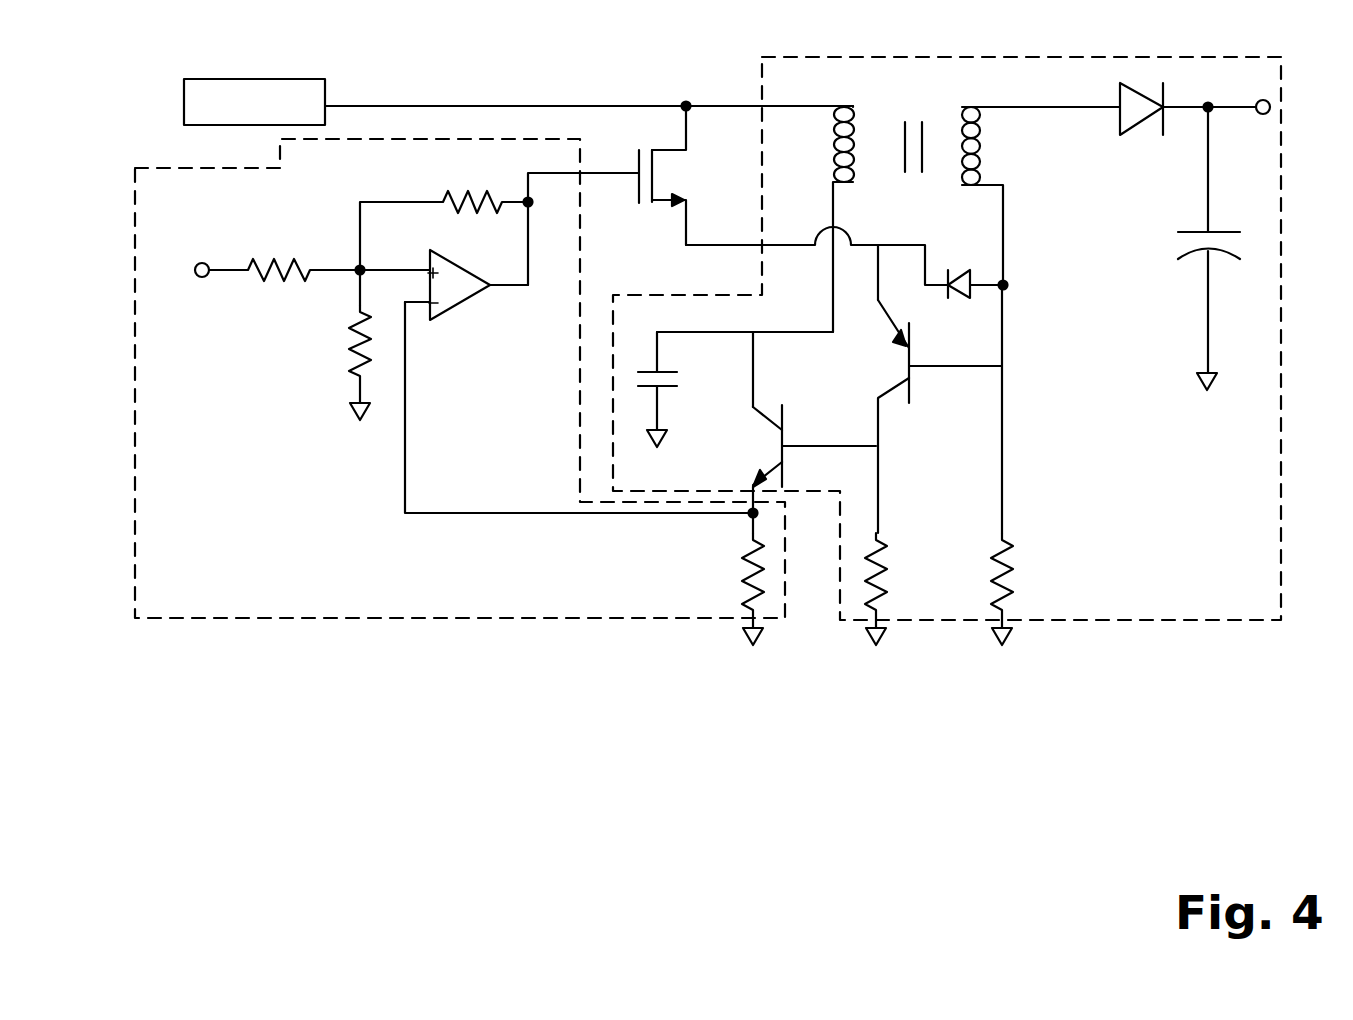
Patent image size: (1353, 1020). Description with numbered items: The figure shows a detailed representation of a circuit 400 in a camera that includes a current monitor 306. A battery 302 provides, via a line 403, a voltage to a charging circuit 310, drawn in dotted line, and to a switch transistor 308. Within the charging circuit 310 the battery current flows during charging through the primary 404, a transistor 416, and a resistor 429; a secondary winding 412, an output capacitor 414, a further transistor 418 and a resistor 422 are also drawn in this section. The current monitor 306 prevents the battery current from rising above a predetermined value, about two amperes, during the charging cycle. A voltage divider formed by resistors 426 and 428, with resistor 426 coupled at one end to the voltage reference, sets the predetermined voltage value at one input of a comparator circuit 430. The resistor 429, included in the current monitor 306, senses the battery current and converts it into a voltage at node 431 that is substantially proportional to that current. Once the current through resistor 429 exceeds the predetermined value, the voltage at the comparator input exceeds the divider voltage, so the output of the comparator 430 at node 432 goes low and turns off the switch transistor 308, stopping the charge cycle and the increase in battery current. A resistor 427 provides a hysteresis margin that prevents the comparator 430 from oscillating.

The circuit 400 is at (326, 786).
The battery 302 is at (243, 76).
The line 403 is at (360, 104).
The primary 404 is at (815, 201).
The switch transistor 308 is at (681, 148).
The transformer secondary winding 412 is at (982, 118).
The output capacitor 414 is at (1190, 229).
The charging circuit 310 is at (1281, 315).
The current monitor 306 is at (515, 618).
The resistor 426 is at (682, 352).
The resistor 427 is at (444, 212).
The resistor 428 is at (337, 345).
The comparator circuit 430 is at (468, 298).
The node 432 is at (532, 205).
The transistor 416 is at (785, 428).
The transistor 418 is at (910, 390).
The resistor 429 is at (728, 579).
The node 431 is at (757, 515).
The resistor 422 is at (898, 589).